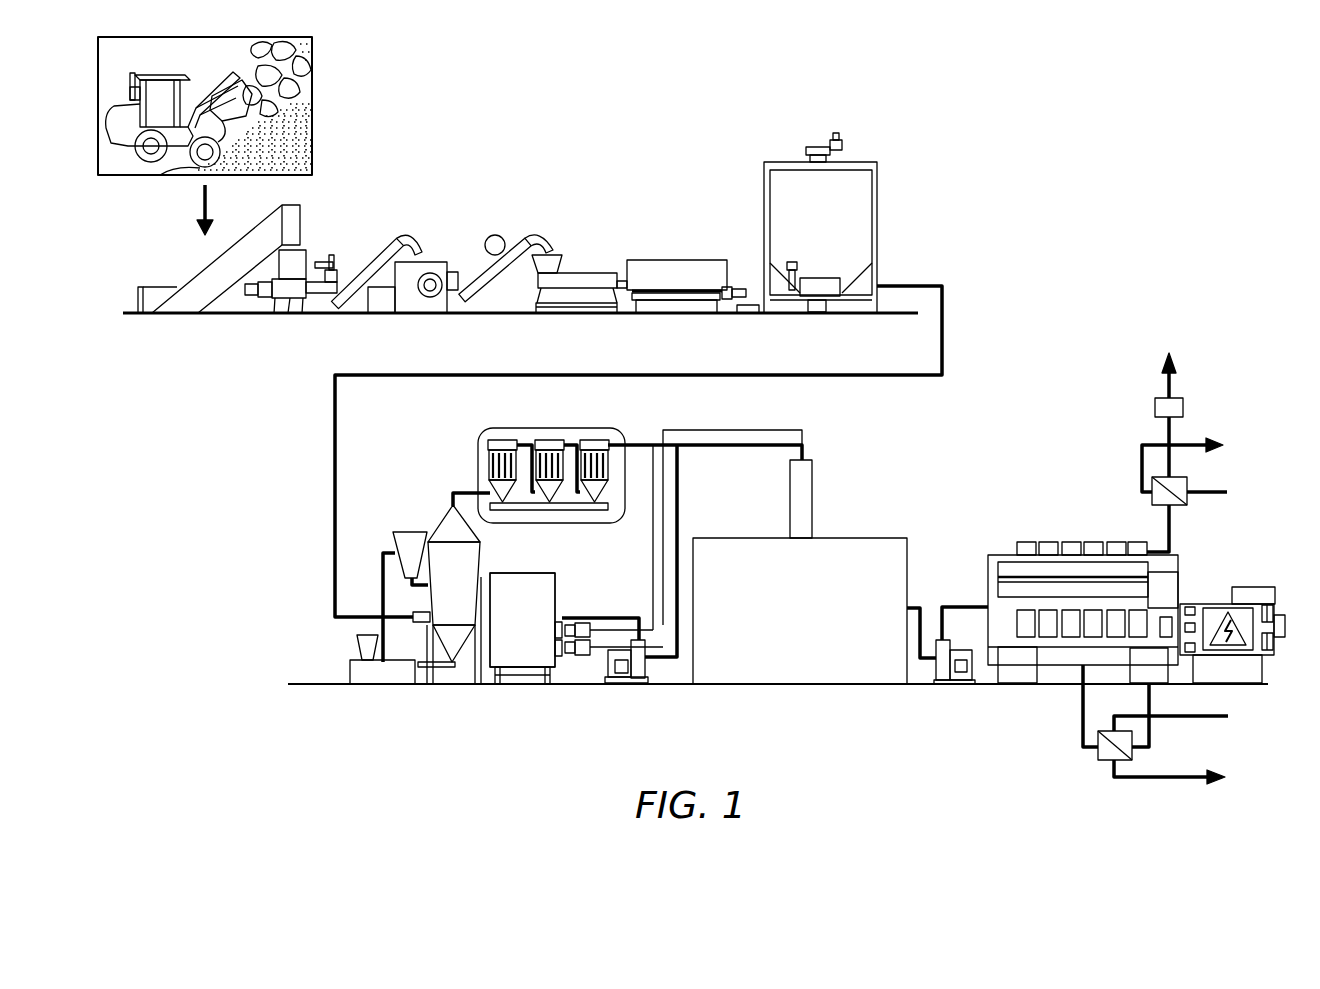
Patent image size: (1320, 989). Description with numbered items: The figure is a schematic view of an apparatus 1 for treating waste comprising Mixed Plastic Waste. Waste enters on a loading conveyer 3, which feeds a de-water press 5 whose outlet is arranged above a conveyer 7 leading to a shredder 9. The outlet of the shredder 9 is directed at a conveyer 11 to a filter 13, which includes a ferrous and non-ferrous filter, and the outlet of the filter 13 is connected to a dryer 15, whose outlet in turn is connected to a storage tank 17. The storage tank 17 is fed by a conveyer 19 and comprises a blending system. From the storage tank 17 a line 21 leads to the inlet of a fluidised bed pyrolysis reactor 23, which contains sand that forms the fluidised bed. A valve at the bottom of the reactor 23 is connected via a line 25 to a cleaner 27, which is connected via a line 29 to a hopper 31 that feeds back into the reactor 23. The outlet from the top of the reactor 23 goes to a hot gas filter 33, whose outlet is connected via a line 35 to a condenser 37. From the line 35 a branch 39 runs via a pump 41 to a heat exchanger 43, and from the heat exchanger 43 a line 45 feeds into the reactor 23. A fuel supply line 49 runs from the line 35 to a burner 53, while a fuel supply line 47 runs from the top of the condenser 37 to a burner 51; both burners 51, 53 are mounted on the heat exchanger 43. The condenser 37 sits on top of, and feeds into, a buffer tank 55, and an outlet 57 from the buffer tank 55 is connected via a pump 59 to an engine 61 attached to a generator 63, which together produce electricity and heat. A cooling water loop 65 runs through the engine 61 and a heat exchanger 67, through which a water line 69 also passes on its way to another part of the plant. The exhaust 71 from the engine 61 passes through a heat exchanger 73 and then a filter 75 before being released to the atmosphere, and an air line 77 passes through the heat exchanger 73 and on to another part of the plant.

The apparatus 1 is at (968, 101).
The loading conveyer 3 is at (207, 265).
The de-water press 5 is at (288, 314).
The conveyer 7 is at (402, 238).
The shredder 9 is at (440, 262).
The conveyer 11 is at (532, 236).
The filter 13 is at (592, 272).
The dryer 15 is at (676, 260).
The storage tank 17 is at (862, 189).
The conveyer 19 is at (812, 146).
The line 21 is at (945, 300).
The fluidised bed pyrolysis reactor 23 is at (441, 523).
The line 25 is at (448, 668).
The cleaner 27 is at (350, 668).
The line 29 is at (380, 596).
The hopper 31 is at (393, 540).
The hot gas filter 33 is at (495, 428).
The line 35 is at (738, 444).
The condenser 37 is at (815, 470).
The branch 39 is at (680, 488).
The pump 41 is at (637, 681).
The heat exchanger 43 is at (532, 572).
The line 45 is at (483, 620).
The fuel supply line 47 is at (805, 433).
The fuel supply line 49 is at (653, 538).
The burner 51 is at (580, 657).
The burner 53 is at (583, 622).
The buffer tank 55 is at (886, 537).
The outlet 57 is at (919, 606).
The pump 59 is at (944, 672).
The engine 61 is at (1024, 568).
The generator 63 is at (1212, 614).
The cooling water loop 65 is at (1081, 733).
The heat exchanger 67 is at (1103, 762).
The water line 69 is at (1172, 780).
The exhaust 71 is at (1163, 360).
The heat exchanger 73 is at (1150, 500).
The filter 75 is at (1153, 407).
The air line 77 is at (1197, 442).